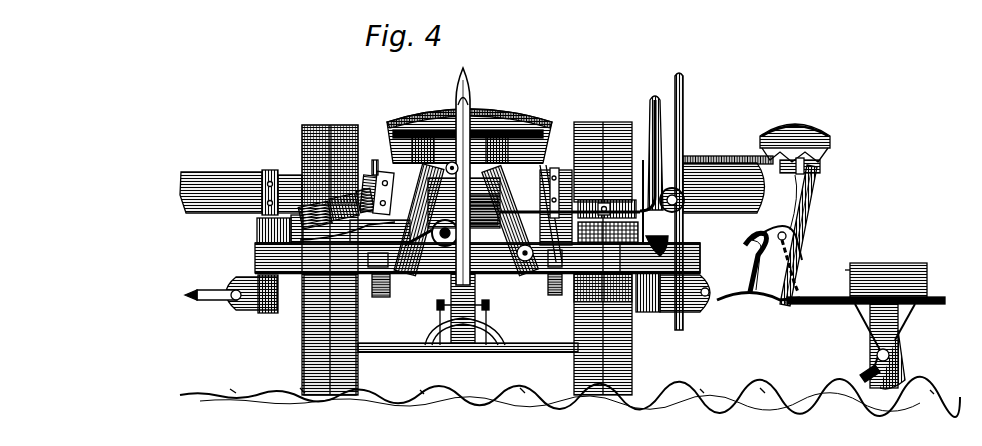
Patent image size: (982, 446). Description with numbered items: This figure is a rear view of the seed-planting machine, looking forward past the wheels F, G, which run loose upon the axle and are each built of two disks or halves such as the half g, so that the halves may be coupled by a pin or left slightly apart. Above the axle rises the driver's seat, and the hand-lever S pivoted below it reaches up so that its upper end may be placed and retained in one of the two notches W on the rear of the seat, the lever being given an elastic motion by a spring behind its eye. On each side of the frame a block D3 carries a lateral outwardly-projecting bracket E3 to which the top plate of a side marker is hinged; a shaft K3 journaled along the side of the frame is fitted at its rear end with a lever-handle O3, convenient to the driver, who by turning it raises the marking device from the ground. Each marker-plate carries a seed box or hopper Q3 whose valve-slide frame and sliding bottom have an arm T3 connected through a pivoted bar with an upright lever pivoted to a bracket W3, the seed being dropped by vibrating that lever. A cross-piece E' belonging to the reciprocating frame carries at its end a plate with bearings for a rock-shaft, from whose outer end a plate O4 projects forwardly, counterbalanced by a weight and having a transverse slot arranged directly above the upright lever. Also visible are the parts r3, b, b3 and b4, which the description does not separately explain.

The cross-piece E' is at (241, 185).
The hand-lever S is at (470, 95).
The notches W is at (469, 136).
The lever-handle O3 is at (676, 201).
The plate O4 is at (807, 145).
The lever r3 is at (803, 235).
The arm T3 is at (696, 214).
The bracket W3 is at (759, 263).
The seed box or hopper Q3 is at (866, 317).
The brackets E3 is at (469, 304).
The blocks D3 is at (428, 302).
The wheel G is at (318, 260).
The wheel disk or half g is at (330, 335).
The wheel F is at (591, 258).
The shaft K3 is at (478, 309).
The tilted block assembly b is at (353, 215).
The pivoted arm b3 is at (522, 220).
The guide block b4 is at (608, 214).